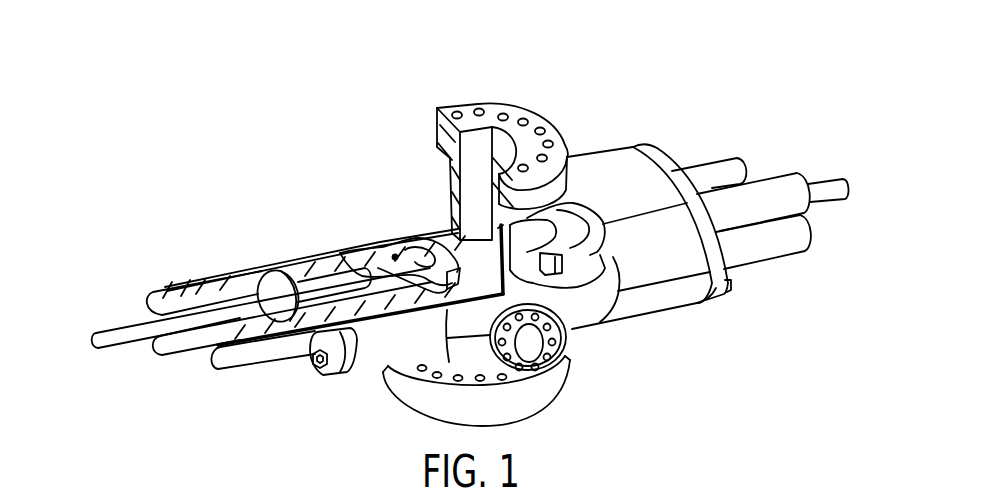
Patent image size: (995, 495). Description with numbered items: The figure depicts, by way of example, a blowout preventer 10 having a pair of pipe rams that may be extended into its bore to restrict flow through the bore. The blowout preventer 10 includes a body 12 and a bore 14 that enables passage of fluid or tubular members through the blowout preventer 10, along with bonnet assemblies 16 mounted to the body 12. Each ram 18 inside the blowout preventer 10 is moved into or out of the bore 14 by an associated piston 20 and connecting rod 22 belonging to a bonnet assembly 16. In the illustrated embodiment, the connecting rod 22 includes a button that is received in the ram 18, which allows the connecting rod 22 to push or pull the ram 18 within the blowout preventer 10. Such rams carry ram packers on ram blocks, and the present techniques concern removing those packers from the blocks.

The blowout preventer 10 is at (380, 88).
The body 12 is at (461, 358).
The bore 14 is at (490, 128).
The bonnet assemblies 16 is at (677, 307).
The ram 18 is at (402, 242).
The piston 20 is at (285, 283).
The connecting rod 22 is at (331, 280).